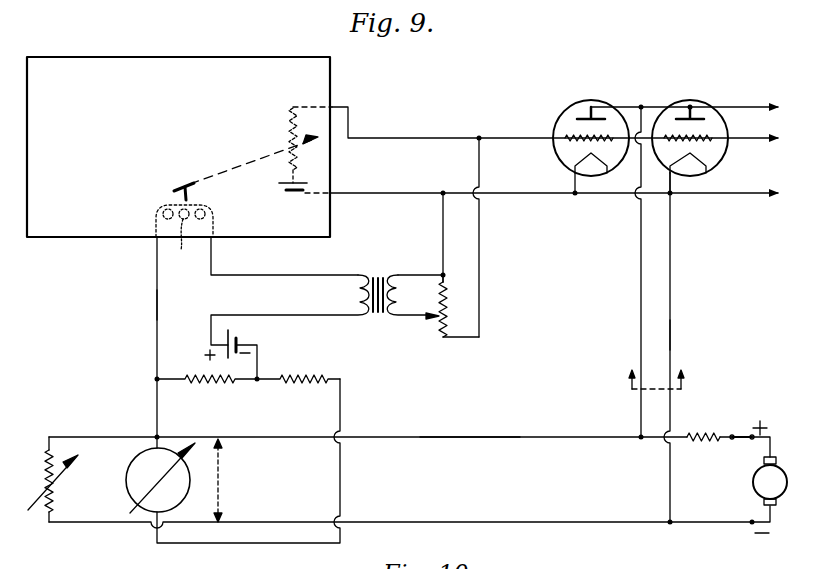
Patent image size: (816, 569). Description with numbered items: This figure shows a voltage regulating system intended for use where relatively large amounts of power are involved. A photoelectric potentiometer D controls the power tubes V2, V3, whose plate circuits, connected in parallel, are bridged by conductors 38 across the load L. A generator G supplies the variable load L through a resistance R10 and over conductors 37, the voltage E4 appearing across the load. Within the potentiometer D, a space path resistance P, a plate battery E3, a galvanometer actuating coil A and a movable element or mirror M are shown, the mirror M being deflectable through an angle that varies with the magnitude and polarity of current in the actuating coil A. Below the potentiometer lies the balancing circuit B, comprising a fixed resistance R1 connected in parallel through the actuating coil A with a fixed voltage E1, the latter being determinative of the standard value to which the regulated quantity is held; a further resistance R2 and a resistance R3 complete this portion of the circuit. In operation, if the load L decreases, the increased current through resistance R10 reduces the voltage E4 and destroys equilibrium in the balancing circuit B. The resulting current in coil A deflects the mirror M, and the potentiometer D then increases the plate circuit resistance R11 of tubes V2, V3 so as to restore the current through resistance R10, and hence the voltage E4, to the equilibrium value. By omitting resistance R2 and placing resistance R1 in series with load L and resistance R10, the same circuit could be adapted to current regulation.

The photoelectric potentiometer D is at (188, 66).
The space path resistance P is at (290, 119).
The movable element or mirror M is at (176, 189).
The plate battery E3 is at (286, 193).
The actuating coil A is at (186, 240).
The balancing circuit B is at (157, 306).
The fixed voltage E1 is at (232, 333).
The fixed resistance R1 is at (233, 382).
The resistance R2 is at (325, 382).
The variable resistor R3 is at (452, 302).
The power tube V2 is at (566, 106).
The power tube V3 is at (671, 104).
The conductors 38 is at (671, 336).
The plate circuit resistance R11 is at (674, 383).
The resistance R10 is at (698, 430).
The generator G is at (753, 488).
The conductors 37 is at (460, 468).
The load resistance L is at (58, 490).
The voltage E4 is at (227, 480).